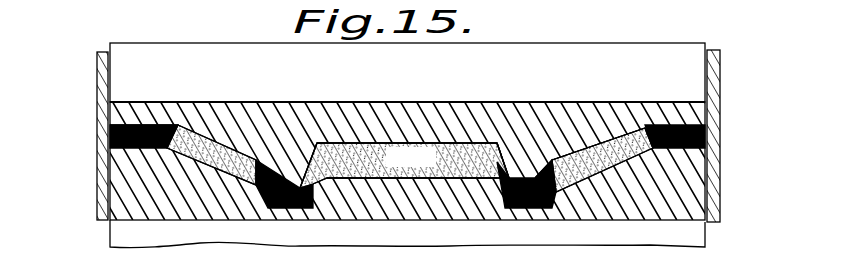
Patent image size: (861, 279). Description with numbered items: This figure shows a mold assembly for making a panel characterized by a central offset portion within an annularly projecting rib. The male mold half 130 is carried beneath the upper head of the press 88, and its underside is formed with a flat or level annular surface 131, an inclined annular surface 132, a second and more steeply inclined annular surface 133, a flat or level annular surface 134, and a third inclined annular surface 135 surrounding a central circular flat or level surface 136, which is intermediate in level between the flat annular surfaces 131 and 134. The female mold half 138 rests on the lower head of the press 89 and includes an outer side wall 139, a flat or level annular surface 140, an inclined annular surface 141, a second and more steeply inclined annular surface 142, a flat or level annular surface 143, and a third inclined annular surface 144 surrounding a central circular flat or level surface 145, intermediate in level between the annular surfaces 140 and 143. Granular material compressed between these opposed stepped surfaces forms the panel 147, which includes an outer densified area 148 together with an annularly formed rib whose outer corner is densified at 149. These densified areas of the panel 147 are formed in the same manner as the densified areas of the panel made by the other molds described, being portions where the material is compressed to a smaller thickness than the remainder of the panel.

The upper head of the press 88 is at (595, 22).
The lower head of the press 89 is at (684, 236).
The male mold half 130 is at (257, 97).
The flat or level annular surface 131 is at (675, 145).
The inclined annular surface 132 is at (612, 150).
The second and more steeply inclined annular surface 133 is at (547, 173).
The flat or level annular surface 134 is at (283, 187).
The third inclined annular surface 135 is at (506, 172).
The central circular flat or level surface 136 is at (417, 108).
The female mold half 138 is at (724, 189).
The outer side wall 139 is at (722, 90).
The flat or level annular surface 140 is at (684, 148).
The inclined annular surface 141 is at (613, 168).
The second and more steeply inclined annular surface 142 is at (564, 194).
The flat or level annular surface 143 is at (535, 199).
The third inclined annular surface 144 is at (491, 180).
The central circular flat or level surface 145 is at (382, 177).
The panel 147 is at (435, 167).
The outer densified area 148 is at (135, 149).
The densified outer corner of the rib 149 is at (262, 190).